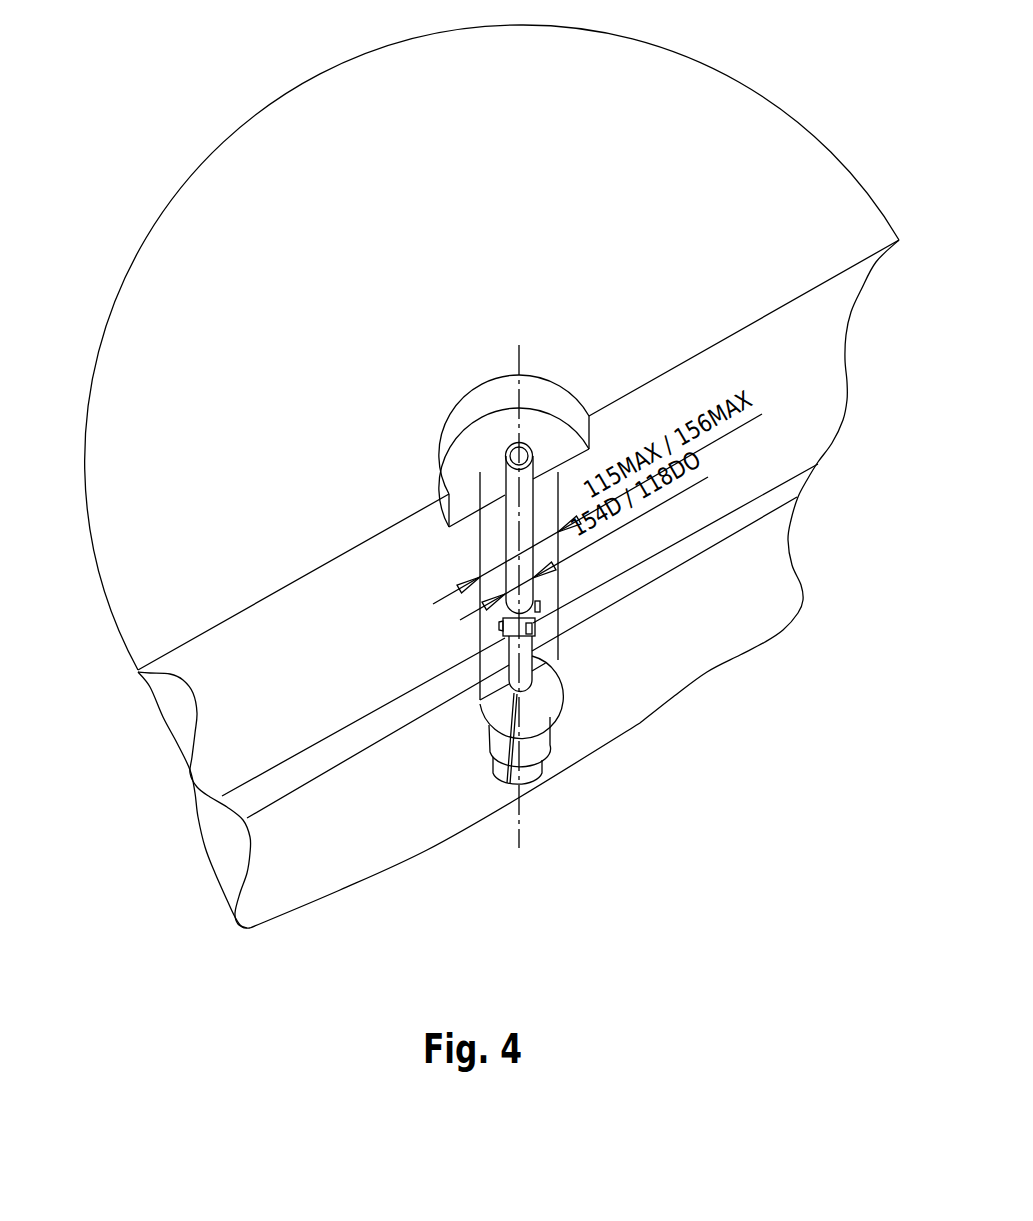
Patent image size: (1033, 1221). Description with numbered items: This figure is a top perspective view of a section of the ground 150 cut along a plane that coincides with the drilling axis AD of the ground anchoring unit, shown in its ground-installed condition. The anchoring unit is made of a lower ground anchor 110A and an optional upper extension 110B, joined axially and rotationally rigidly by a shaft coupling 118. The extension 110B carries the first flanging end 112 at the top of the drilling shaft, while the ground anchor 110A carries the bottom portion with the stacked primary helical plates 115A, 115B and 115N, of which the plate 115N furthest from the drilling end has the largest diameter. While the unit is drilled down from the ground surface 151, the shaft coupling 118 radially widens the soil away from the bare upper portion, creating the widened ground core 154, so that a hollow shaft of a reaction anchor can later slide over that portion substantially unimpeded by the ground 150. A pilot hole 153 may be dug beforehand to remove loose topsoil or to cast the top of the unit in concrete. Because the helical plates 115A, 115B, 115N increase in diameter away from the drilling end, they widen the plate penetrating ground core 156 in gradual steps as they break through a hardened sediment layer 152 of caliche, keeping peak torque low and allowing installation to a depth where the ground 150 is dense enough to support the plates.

The first flanging end 112 is at (524, 444).
The extension 110B is at (525, 525).
The ground anchor 110A is at (532, 675).
The shaft coupling 118 is at (537, 628).
The helical plate 115N is at (545, 706).
The helical plate 115B is at (528, 743).
The helical plate 115A is at (523, 773).
The ground 150 is at (136, 672).
The ground surface 151 is at (165, 543).
The hardened sediment layer 152 is at (258, 788).
The pilot hole 153 is at (468, 418).
The widened ground core 154 is at (440, 473).
The plate penetrating ground core 156 is at (495, 768).
The drilling axis AD is at (519, 357).